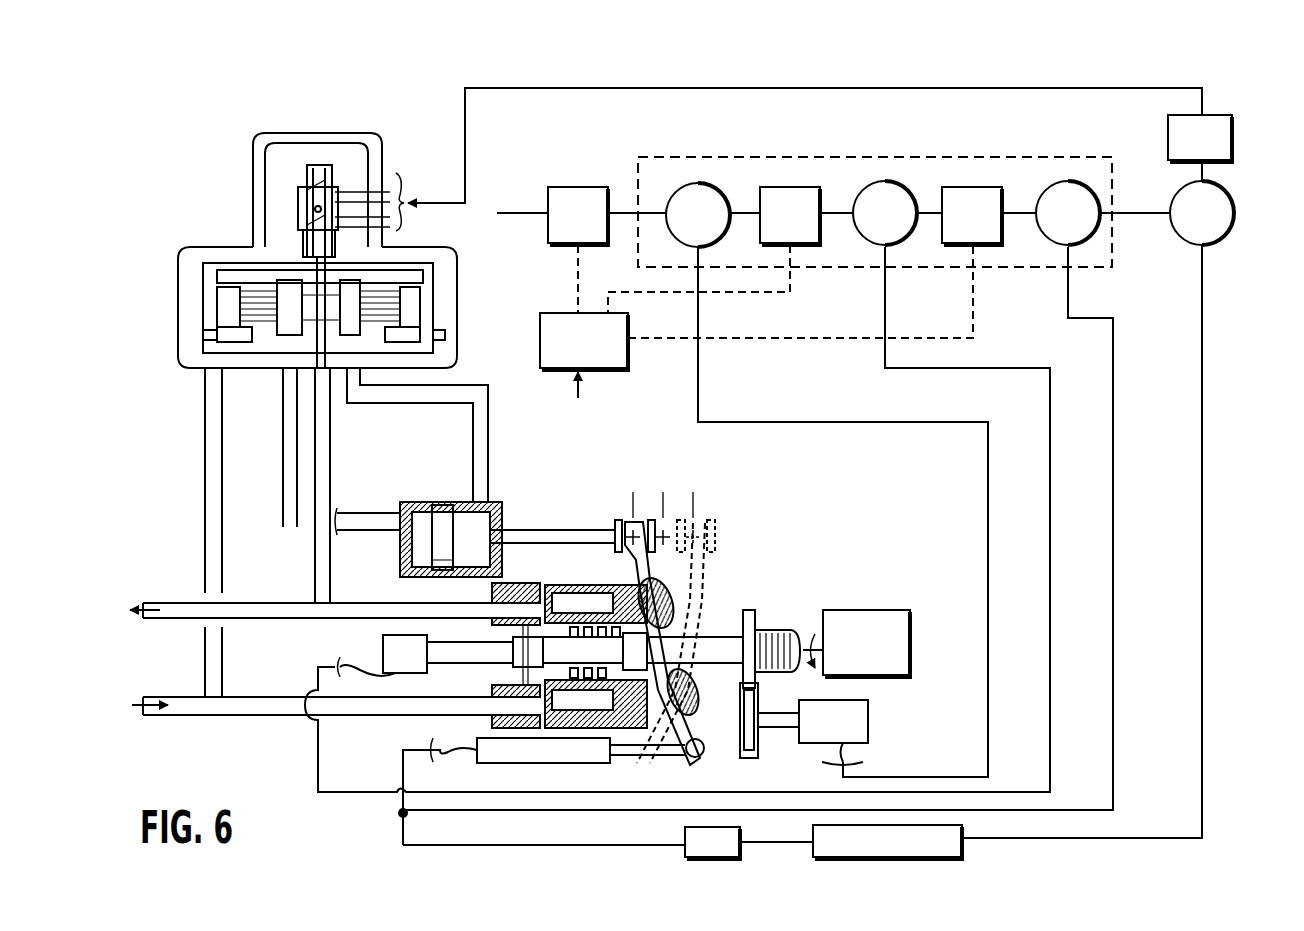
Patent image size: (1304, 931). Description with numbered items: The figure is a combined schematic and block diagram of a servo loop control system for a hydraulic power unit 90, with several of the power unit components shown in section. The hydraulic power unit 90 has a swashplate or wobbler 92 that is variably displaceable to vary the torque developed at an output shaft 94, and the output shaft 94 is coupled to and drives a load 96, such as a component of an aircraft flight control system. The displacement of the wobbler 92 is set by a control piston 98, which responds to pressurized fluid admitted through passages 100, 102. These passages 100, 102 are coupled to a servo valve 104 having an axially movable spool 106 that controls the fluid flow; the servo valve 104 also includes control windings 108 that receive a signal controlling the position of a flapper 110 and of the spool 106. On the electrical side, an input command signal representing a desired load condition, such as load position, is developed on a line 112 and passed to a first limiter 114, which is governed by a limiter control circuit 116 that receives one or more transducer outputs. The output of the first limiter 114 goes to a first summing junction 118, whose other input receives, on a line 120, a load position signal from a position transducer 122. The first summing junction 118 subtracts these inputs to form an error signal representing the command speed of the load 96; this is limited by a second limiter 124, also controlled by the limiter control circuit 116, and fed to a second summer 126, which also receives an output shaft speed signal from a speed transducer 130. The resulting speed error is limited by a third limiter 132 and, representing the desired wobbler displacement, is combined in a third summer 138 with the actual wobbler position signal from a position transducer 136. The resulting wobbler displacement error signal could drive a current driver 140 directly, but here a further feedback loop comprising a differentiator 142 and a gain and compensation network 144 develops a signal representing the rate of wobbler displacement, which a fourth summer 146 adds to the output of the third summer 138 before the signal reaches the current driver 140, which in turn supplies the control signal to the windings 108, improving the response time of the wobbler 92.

The hydraulic power unit 90 is at (668, 595).
The wobbler 92 is at (690, 555).
The output shaft 94 is at (722, 635).
The load 96 is at (855, 610).
The control piston 98 is at (440, 510).
The passage 100 is at (378, 510).
The passage 102 is at (473, 420).
The servo valve 104 is at (178, 337).
The spool 106 is at (220, 302).
The control windings 108 is at (300, 198).
The flapper 110 is at (310, 240).
The line 112 is at (527, 212).
The first limiter 114 is at (582, 187).
The limiter control circuit 116 is at (540, 340).
The first summing junction 118 is at (700, 188).
The line 120 is at (988, 640).
The position transducer 122 is at (862, 722).
The second limiter 124 is at (810, 188).
The second summer 126 is at (888, 183).
The speed transducer 130 is at (383, 642).
The third limiter 132 is at (975, 188).
The position transducer 136 is at (560, 763).
The third summer 138 is at (1058, 184).
The current driver 140 is at (1230, 152).
The differentiator 142 is at (685, 836).
The gain and compensation network 144 is at (965, 832).
The fourth summer 146 is at (1225, 196).